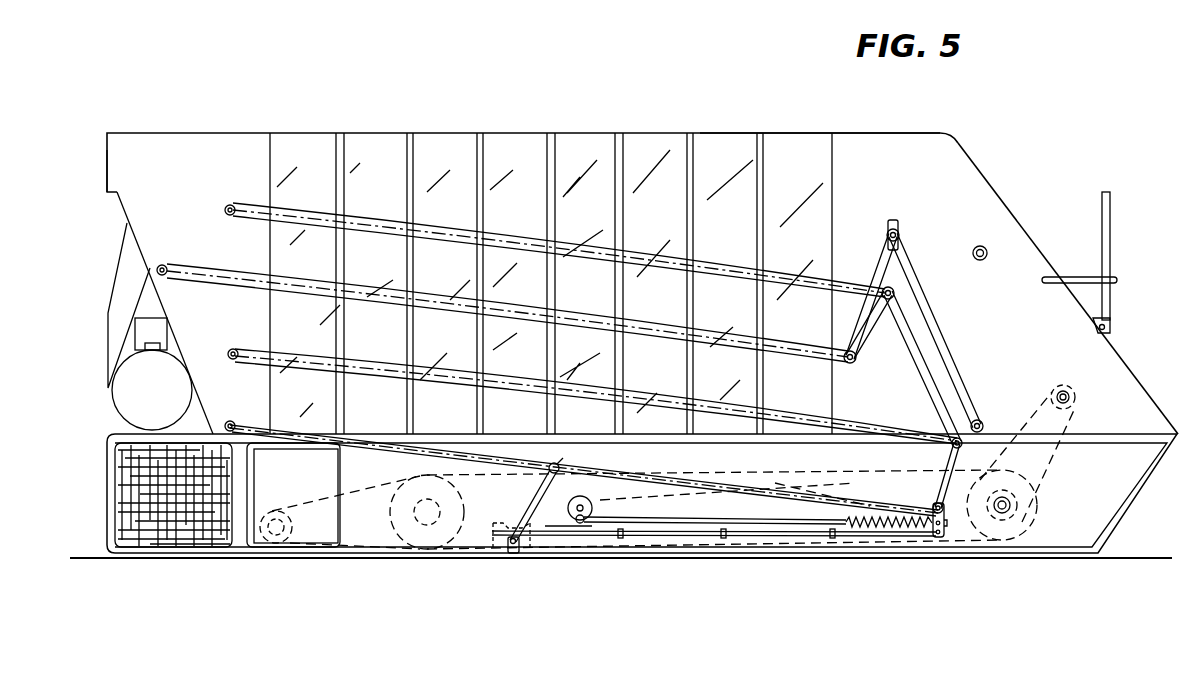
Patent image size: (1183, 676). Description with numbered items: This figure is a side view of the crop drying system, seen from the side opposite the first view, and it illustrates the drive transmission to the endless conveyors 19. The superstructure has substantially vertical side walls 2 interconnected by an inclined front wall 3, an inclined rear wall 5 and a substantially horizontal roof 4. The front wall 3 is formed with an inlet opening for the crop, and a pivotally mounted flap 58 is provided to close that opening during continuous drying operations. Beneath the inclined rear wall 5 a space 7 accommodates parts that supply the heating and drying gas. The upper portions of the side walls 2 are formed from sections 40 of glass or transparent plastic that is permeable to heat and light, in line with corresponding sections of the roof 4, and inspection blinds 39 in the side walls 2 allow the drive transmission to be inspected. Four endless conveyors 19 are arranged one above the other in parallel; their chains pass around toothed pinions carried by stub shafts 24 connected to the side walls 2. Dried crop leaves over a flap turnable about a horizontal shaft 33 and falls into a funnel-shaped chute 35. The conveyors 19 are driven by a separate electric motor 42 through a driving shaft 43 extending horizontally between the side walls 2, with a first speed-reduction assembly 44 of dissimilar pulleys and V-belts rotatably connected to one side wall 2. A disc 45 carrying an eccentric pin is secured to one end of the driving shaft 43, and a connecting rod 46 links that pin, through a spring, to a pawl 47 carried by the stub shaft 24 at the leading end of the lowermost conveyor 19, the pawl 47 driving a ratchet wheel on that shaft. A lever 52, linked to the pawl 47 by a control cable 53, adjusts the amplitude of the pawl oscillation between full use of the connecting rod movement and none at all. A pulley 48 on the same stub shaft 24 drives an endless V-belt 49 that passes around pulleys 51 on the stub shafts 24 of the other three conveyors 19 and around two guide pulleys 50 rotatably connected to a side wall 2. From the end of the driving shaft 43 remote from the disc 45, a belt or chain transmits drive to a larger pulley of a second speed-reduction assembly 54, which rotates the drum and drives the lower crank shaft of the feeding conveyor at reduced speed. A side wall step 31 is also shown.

The side walls 2 is at (177, 142).
The front wall 3 is at (1035, 246).
The roof 4 is at (890, 134).
The rear wall 5 is at (124, 212).
The space 7 is at (130, 470).
The endless conveyors 19 is at (529, 242).
The stub shafts 24 is at (168, 268).
The side wall step 31 is at (107, 157).
The horizontal shaft 33 is at (156, 265).
The funnel-shaped chute 35 is at (126, 281).
The inspection blinds 39 is at (328, 511).
The sections 40 is at (523, 136).
The electric motor 42 is at (270, 506).
The driving shaft 43 is at (582, 505).
The first speed-reduction assembly 44 is at (415, 478).
The disc 45 is at (564, 522).
The connecting rod 46 is at (703, 521).
The pawl 47 is at (938, 540).
The pulley 48 is at (934, 507).
The endless V-belt 49 is at (968, 374).
The guide pulleys 50 is at (887, 235).
The pulleys 51 is at (894, 290).
The lever 52 is at (532, 516).
The control cable 53 is at (703, 538).
The second speed-reduction assembly 54 is at (1040, 513).
The pivotally mounted flap 58 is at (1118, 220).